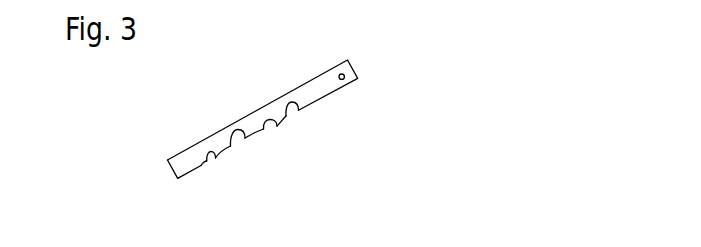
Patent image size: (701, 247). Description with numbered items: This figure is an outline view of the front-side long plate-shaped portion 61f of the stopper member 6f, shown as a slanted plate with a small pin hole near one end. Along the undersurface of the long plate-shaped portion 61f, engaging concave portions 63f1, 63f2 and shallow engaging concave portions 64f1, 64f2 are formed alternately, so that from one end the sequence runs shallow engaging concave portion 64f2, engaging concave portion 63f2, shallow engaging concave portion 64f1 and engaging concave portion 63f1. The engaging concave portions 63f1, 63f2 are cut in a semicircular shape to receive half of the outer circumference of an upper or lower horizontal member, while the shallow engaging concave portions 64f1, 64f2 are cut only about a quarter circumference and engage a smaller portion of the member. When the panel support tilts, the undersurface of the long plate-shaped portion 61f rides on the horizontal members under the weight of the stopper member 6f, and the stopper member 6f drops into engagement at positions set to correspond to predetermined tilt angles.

The long plate-shaped portion 61f is at (347, 104).
The stopper member 6f is at (344, 74).
The engaging concave portion 63f1 is at (298, 112).
The engaging concave portion 63f2 is at (245, 138).
The shallow engaging concave portion 64f1 is at (277, 126).
The shallow engaging concave portion 64f2 is at (216, 158).